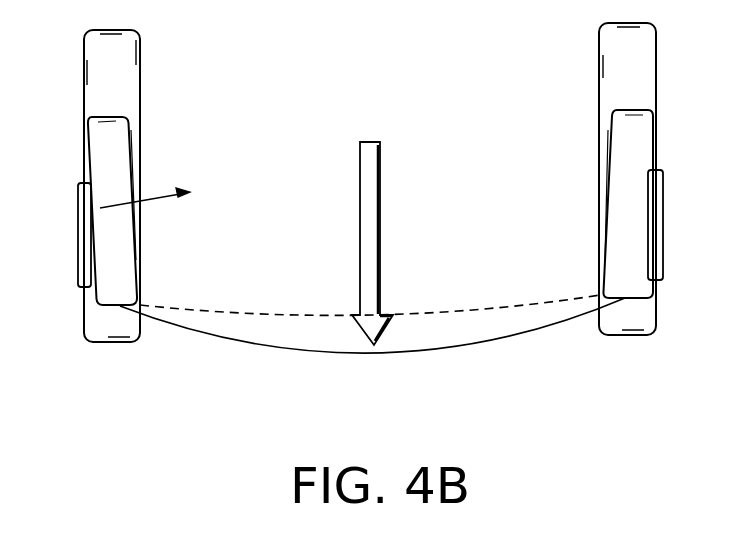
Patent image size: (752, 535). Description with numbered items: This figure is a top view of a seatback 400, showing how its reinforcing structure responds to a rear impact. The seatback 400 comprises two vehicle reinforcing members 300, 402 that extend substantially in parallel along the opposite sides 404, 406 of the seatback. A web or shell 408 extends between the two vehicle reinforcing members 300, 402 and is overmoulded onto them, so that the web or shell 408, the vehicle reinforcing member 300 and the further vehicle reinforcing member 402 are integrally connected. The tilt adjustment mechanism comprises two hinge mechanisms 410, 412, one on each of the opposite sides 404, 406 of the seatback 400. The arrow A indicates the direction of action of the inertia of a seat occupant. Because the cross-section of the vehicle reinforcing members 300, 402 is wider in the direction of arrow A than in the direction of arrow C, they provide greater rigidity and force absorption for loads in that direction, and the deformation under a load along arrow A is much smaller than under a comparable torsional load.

The vehicle reinforcing member 300 is at (100, 270).
The seatback 400 is at (367, 104).
The further vehicle reinforcing member 402 is at (640, 263).
The side of the seatback 404 is at (69, 97).
The side of the seatback 406 is at (710, 90).
The web or shell 408 is at (372, 355).
The hinge mechanism 410 is at (78, 203).
The hinge mechanism 412 is at (663, 193).